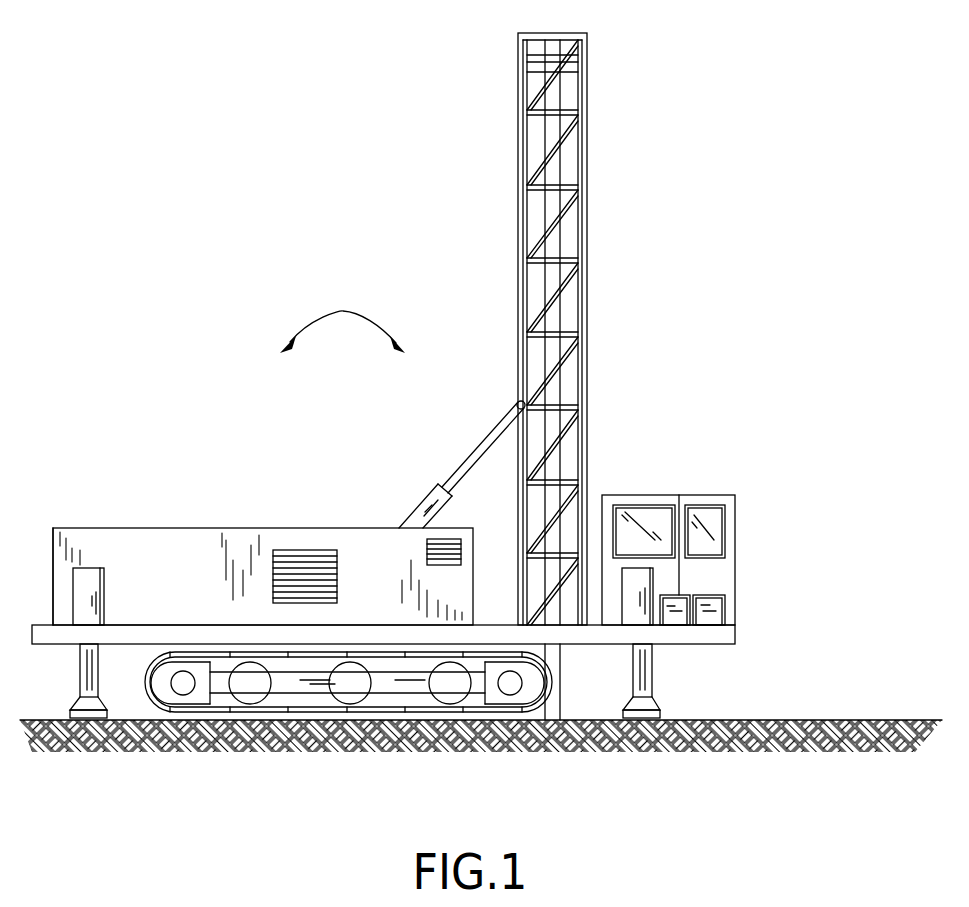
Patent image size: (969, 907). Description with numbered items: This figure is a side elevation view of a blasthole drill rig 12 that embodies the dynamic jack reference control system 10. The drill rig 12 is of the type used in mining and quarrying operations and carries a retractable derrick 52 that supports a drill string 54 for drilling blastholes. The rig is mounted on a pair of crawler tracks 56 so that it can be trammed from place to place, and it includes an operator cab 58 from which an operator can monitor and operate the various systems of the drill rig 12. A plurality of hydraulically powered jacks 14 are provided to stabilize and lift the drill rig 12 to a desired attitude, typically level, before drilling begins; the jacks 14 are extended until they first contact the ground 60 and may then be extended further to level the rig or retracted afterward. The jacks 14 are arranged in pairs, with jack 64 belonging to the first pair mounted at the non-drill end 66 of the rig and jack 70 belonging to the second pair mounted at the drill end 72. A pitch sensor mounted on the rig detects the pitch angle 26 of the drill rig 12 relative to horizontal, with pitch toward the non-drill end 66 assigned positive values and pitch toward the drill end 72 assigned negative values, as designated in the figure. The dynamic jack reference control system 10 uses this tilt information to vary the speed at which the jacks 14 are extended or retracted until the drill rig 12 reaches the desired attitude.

The dynamic jack reference control system 10 is at (148, 152).
The drill rig 12 is at (121, 520).
The jacks 14 is at (110, 590).
The pitch angle 26 is at (341, 312).
The retractable derrick 52 is at (512, 65).
The drill string 54 is at (560, 163).
The crawler tracks 56 is at (134, 690).
The operator cab 58 is at (735, 495).
The ground 60 is at (841, 720).
The jack 64 is at (78, 676).
The non-drill end 66 is at (52, 578).
The jack 70 is at (653, 676).
The drill end 72 is at (736, 632).